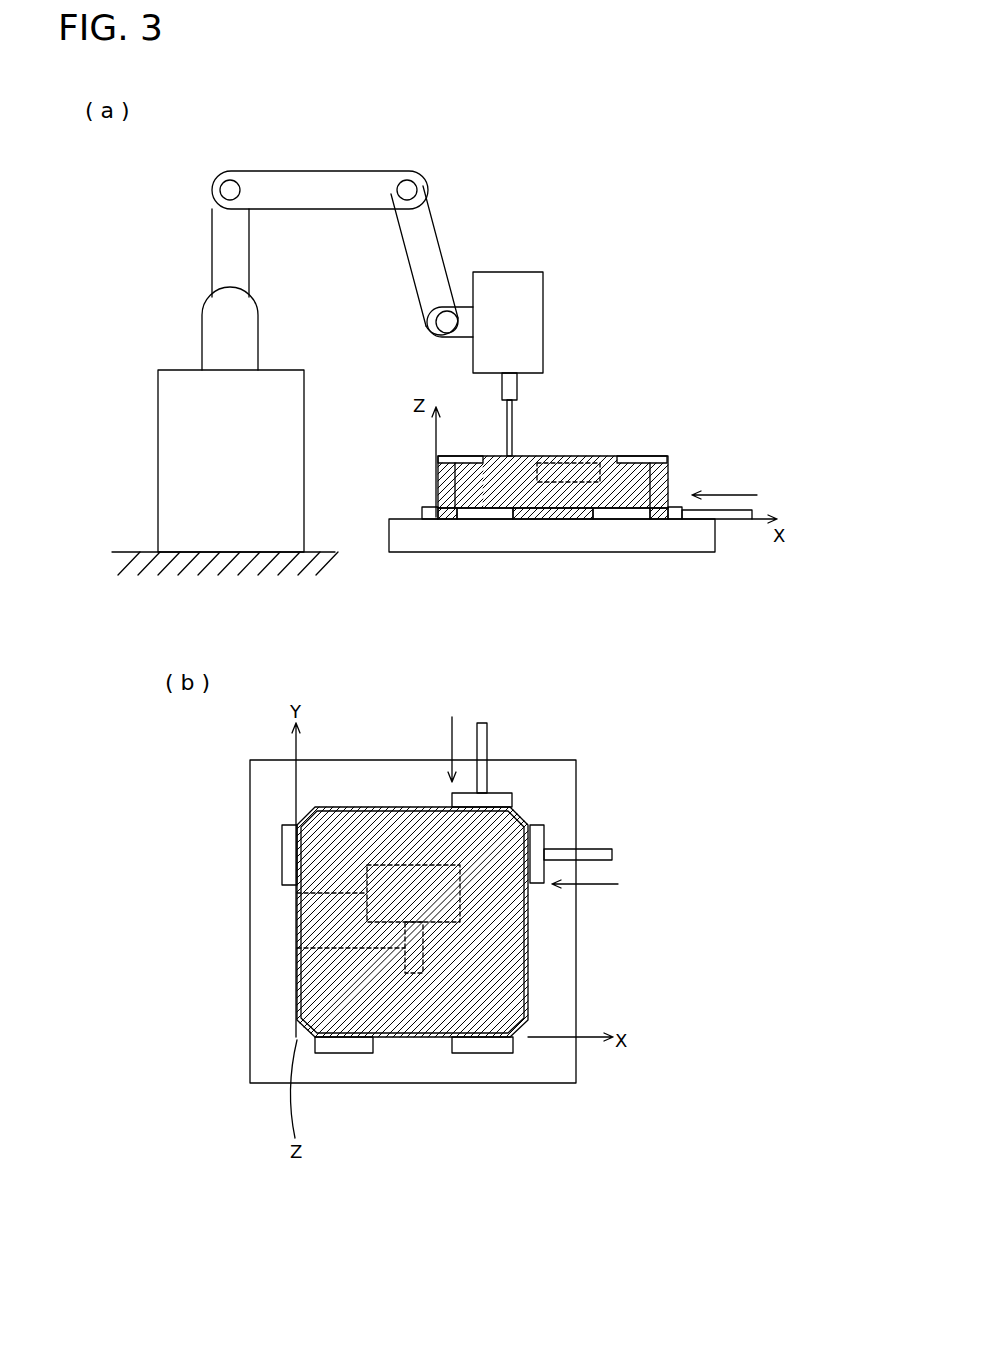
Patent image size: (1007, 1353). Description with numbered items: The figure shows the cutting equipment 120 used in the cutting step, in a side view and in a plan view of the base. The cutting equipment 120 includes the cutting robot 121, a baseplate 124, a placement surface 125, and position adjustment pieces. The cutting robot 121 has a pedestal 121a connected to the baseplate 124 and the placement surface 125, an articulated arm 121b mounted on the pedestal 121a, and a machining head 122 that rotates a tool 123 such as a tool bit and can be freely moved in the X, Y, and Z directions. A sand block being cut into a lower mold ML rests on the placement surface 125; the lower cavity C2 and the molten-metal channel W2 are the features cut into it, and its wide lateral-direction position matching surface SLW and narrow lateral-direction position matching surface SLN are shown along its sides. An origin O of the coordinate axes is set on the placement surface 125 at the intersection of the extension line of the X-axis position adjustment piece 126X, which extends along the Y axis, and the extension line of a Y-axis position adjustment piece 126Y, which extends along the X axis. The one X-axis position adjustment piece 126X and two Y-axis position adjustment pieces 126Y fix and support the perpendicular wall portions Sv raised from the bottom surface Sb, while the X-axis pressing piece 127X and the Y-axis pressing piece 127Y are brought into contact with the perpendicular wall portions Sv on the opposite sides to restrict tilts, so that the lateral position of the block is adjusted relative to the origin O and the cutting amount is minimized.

The cutting equipment 120 is at (665, 148).
The cutting robot 121 is at (294, 230).
The pedestal 121a is at (172, 462).
The articulated arm 121b is at (222, 242).
The machining head 122 is at (543, 320).
The tool 123 is at (512, 428).
The baseplate 124 is at (133, 552).
The placement surface 125 is at (398, 520).
The X-axis position adjustment piece 126X is at (420, 512).
The Y-axis position adjustment piece 126Y is at (483, 513).
The X-axis pressing piece 127X is at (675, 507).
The Y-axis pressing piece 127Y is at (498, 790).
The molten-metal channel W2 is at (575, 455).
The lower cavity C2 is at (612, 455).
The wide lateral-direction position matching surface SLW is at (467, 446).
The narrow lateral-direction position matching surface SLN is at (316, 802).
The lower mold ML is at (668, 478).
The perpendicular wall portion Sv is at (425, 515).
The bottom surface Sb is at (464, 531).
The origin O is at (437, 515).